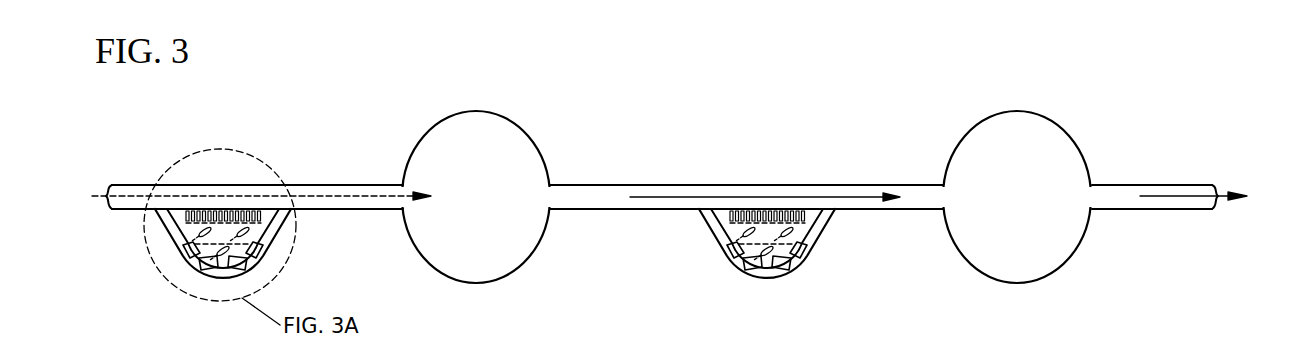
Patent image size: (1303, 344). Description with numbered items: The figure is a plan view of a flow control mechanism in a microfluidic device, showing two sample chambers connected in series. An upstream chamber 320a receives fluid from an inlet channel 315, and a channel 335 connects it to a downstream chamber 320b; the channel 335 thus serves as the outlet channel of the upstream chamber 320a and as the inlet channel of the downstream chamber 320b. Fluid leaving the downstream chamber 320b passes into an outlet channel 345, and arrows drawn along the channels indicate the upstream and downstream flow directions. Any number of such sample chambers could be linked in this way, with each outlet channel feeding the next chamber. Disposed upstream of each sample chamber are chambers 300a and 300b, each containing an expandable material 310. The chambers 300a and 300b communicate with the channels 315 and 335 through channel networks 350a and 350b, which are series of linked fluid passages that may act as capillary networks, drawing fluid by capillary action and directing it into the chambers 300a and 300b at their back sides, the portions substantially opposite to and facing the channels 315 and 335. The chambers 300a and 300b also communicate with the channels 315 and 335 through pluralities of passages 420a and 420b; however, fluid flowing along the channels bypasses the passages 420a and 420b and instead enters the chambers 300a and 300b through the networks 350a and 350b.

The inlet channel 315 is at (177, 185).
The upstream chamber 320a is at (517, 120).
The downstream chamber 320b is at (1060, 122).
The channel 335 is at (763, 183).
The outlet channel 345 is at (1137, 185).
The chamber 300a is at (214, 224).
The chamber 300b is at (762, 223).
The expandable material 310 is at (218, 250).
The channel network 350a is at (195, 264).
The channel network 350b is at (739, 264).
The passages 420a is at (253, 212).
The passages 420b is at (797, 212).